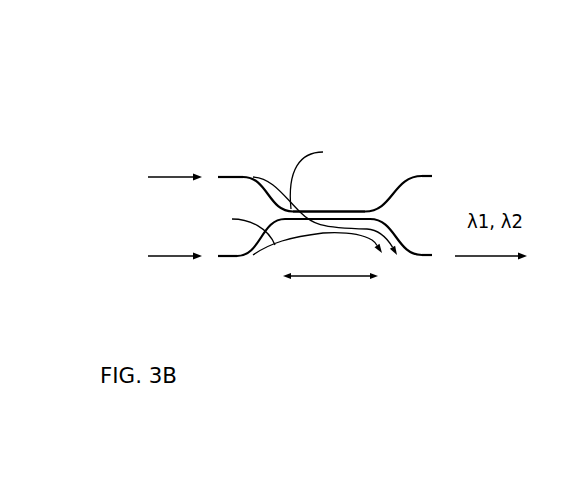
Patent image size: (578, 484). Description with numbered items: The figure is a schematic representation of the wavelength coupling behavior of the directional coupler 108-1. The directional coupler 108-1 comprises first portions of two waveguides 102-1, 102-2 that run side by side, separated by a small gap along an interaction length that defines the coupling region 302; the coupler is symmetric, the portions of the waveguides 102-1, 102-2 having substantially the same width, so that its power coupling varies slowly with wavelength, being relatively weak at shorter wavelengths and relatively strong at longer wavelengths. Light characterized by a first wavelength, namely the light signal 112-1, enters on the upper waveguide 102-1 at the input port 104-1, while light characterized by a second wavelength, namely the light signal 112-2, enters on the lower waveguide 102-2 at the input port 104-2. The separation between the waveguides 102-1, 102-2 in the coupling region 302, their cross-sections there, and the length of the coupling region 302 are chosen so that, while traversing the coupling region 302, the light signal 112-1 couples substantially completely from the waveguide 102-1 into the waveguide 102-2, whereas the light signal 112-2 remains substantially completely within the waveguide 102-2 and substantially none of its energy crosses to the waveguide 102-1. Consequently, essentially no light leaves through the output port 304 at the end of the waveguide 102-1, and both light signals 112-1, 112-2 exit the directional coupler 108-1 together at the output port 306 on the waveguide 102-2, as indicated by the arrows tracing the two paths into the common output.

The directional coupler 108-1 is at (200, 75).
The waveguide 102-1 is at (245, 177).
The waveguide 102-2 is at (242, 256).
The input port 104-1 is at (235, 177).
The input port 104-2 is at (229, 258).
The light signal 112-1 is at (160, 178).
The light signal 112-2 is at (157, 258).
The coupling region 302 is at (351, 188).
The output port 304 is at (422, 175).
The output port 306 is at (422, 256).